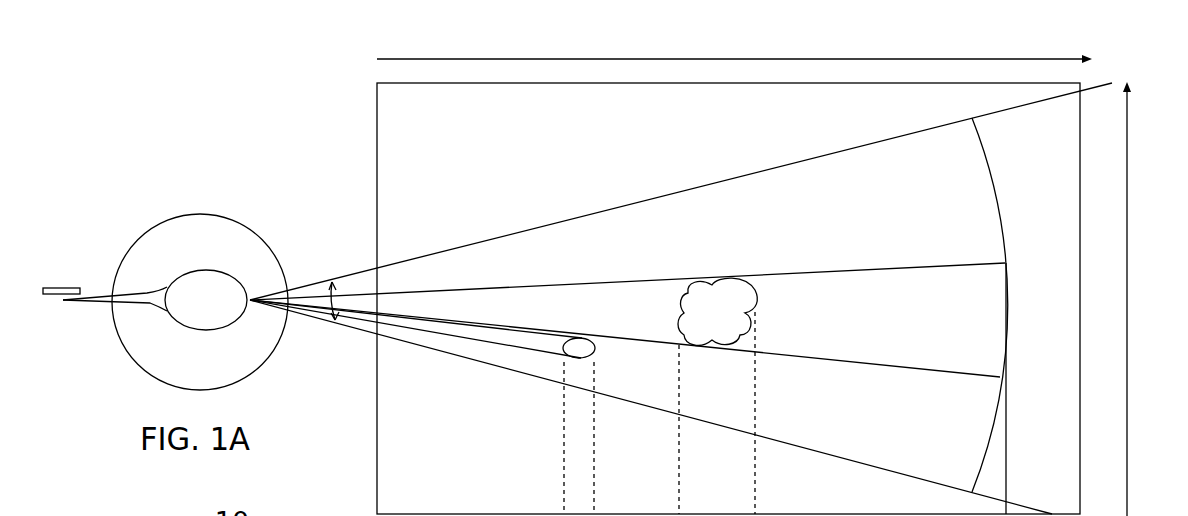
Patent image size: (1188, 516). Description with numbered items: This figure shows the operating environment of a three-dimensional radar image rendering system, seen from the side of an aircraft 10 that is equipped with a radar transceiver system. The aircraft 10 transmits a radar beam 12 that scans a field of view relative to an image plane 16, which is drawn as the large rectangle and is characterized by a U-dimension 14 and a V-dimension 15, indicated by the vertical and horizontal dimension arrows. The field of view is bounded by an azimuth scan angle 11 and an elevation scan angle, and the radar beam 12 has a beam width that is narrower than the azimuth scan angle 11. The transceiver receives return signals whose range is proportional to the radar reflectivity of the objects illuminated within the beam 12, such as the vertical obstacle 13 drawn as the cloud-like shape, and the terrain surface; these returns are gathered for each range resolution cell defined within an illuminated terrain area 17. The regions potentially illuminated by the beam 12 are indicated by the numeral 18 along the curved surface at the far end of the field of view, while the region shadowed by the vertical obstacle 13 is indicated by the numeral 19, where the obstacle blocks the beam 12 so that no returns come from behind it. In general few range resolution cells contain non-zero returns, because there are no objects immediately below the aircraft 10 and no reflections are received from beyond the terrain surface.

The aircraft 10 is at (200, 213).
The azimuth scan angle 11 is at (338, 285).
The radar beam 12 is at (495, 331).
The vertical obstacle 13 is at (730, 280).
The U-dimension 14 is at (1133, 298).
The V-dimension 15 is at (712, 38).
The image plane 16 is at (377, 450).
The illuminated terrain area 17 is at (577, 338).
The regions potentially illuminated by the beam 18 is at (998, 210).
The region shadowed by the vertical obstacle 19 is at (1007, 338).